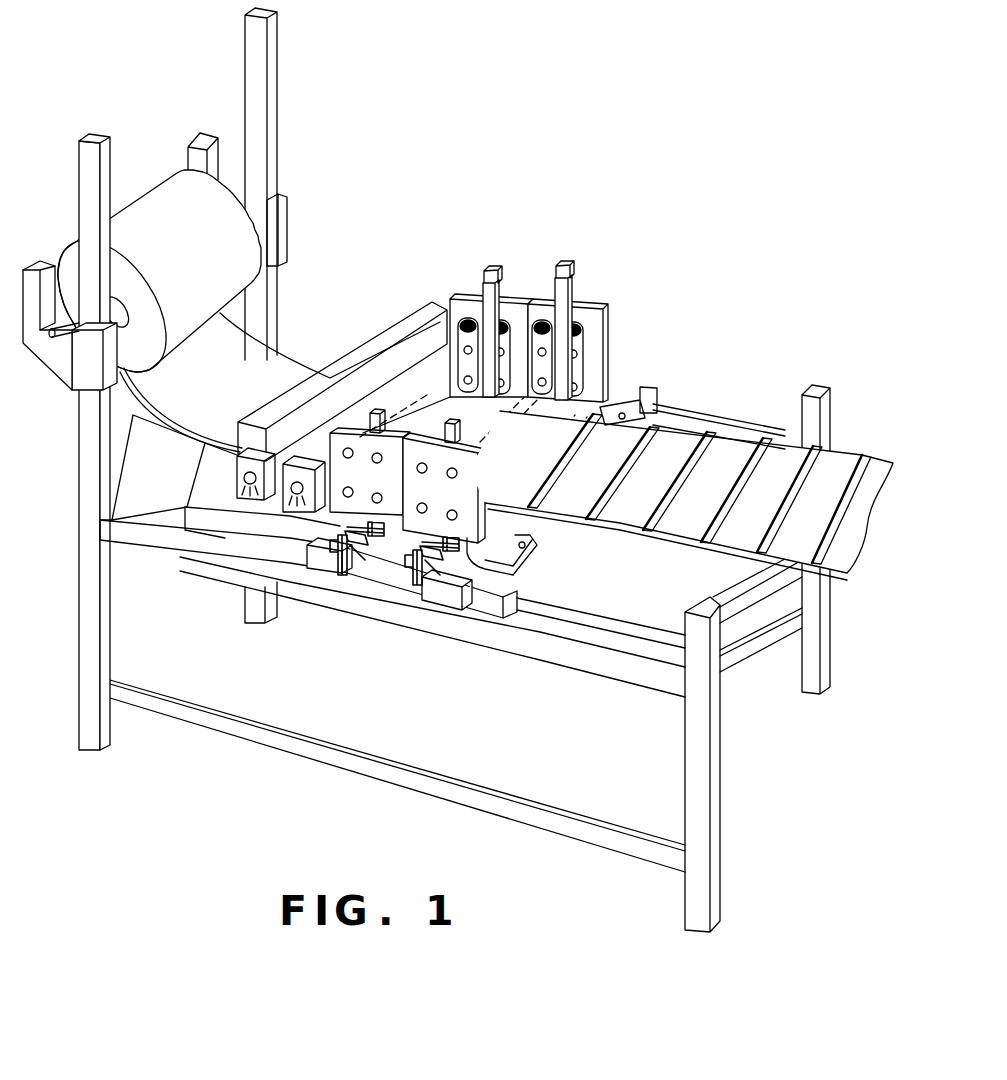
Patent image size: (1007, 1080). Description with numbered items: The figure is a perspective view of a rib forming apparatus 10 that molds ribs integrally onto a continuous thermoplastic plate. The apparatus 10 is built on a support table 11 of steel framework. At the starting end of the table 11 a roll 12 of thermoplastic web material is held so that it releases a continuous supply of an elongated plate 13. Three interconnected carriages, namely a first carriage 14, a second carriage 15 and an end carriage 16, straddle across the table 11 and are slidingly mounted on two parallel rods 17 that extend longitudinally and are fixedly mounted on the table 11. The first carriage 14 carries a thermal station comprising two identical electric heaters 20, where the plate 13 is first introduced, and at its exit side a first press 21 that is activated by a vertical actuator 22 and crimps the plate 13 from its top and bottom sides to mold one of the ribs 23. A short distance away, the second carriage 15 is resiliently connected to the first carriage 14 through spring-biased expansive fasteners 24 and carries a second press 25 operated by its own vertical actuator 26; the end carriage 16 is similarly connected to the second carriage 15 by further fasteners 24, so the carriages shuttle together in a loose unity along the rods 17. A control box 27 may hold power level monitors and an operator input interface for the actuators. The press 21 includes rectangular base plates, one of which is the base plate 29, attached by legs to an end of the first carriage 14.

The rib forming apparatus 10 is at (560, 132).
The support table 11 is at (273, 140).
The roll 12 is at (147, 202).
The elongated plate 13 is at (266, 375).
The first carriage 14 is at (248, 533).
The second carriage 15 is at (378, 565).
The end carriage 16 is at (463, 590).
The parallel rods 17 is at (698, 415).
The electric heaters 20 is at (405, 315).
The first press 21 is at (513, 298).
The vertical actuator 22 is at (495, 285).
The ribs 23 is at (547, 490).
The spring-biased expansive fasteners 24 is at (340, 547).
The second press 25 is at (597, 305).
The vertical actuator 26 is at (573, 293).
The control box 27 is at (128, 500).
The base plate 29 is at (553, 565).